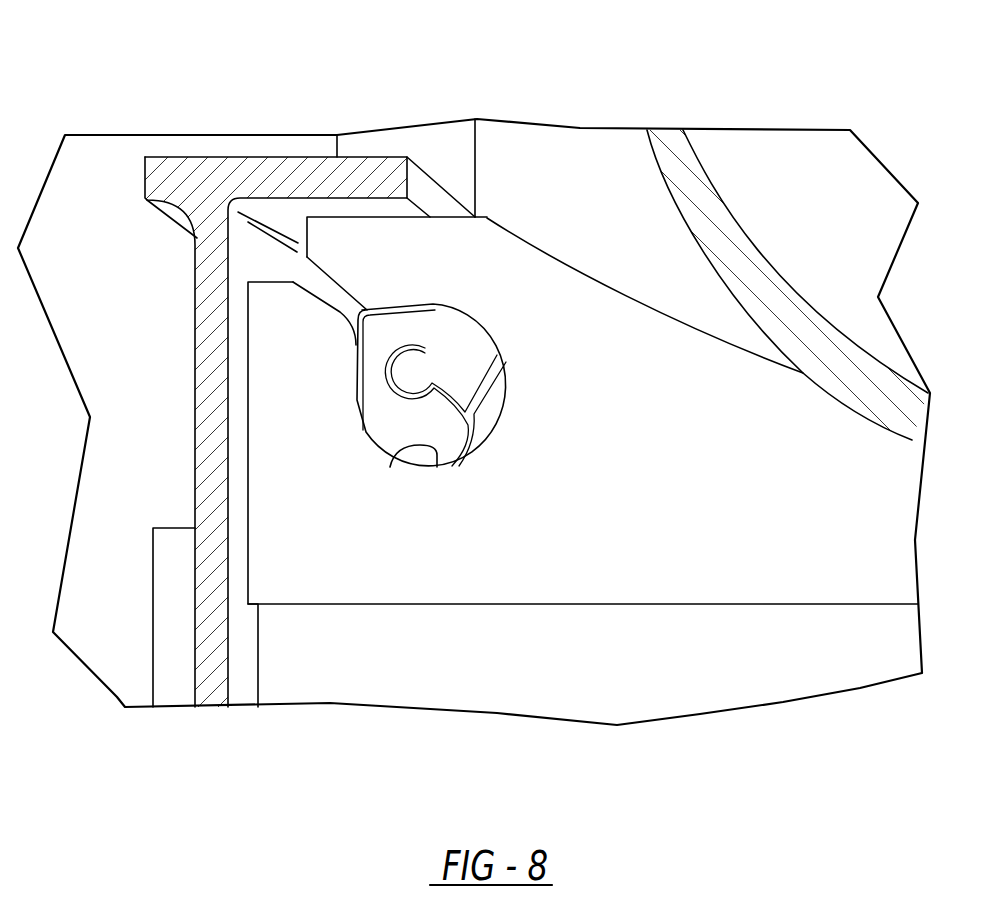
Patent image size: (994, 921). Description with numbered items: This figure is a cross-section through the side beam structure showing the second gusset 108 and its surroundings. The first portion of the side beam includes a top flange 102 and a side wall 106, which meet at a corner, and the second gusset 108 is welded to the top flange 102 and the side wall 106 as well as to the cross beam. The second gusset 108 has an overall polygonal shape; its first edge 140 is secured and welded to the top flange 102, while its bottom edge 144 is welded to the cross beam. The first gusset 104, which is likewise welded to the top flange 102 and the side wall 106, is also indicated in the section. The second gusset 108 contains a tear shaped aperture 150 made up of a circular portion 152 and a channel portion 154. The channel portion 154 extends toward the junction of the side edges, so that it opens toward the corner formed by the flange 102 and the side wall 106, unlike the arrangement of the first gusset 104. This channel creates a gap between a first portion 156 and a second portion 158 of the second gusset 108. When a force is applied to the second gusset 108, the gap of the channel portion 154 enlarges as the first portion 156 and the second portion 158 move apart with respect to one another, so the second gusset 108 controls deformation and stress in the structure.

The top flange 102 is at (352, 175).
The first gusset 104 is at (457, 348).
The side wall 106 is at (208, 370).
The second gusset 108 is at (771, 498).
The first edge 140 is at (246, 531).
The bottom edge 144 is at (620, 605).
The tear shaped aperture 150 is at (488, 425).
The circular portion 152 is at (390, 467).
The channel portion 154 is at (332, 290).
The first portion 156 is at (312, 358).
The second portion 158 is at (449, 285).